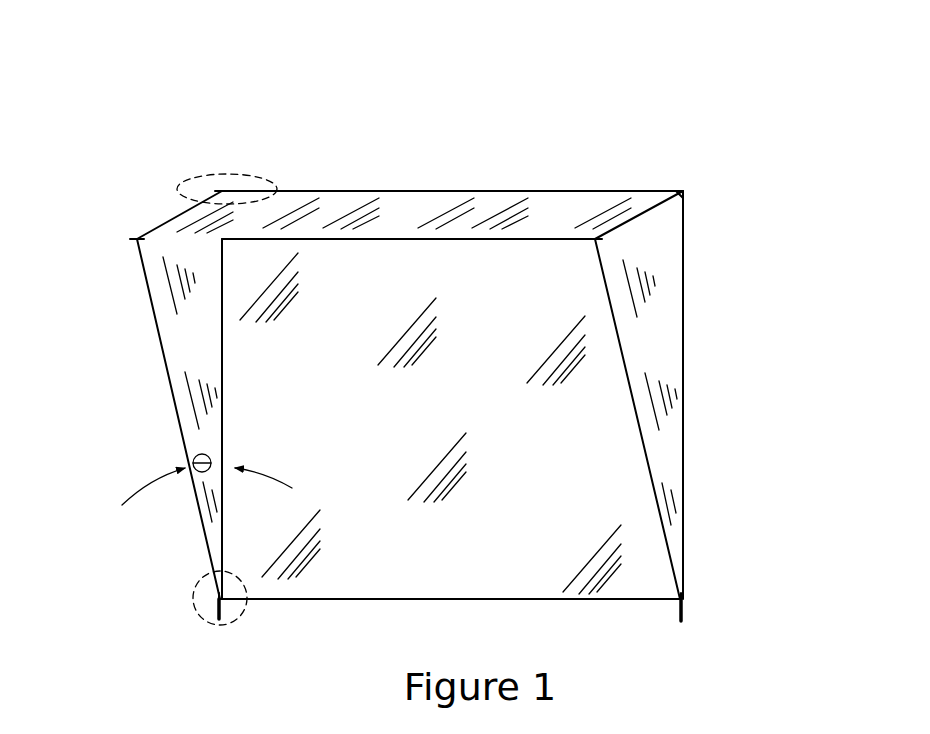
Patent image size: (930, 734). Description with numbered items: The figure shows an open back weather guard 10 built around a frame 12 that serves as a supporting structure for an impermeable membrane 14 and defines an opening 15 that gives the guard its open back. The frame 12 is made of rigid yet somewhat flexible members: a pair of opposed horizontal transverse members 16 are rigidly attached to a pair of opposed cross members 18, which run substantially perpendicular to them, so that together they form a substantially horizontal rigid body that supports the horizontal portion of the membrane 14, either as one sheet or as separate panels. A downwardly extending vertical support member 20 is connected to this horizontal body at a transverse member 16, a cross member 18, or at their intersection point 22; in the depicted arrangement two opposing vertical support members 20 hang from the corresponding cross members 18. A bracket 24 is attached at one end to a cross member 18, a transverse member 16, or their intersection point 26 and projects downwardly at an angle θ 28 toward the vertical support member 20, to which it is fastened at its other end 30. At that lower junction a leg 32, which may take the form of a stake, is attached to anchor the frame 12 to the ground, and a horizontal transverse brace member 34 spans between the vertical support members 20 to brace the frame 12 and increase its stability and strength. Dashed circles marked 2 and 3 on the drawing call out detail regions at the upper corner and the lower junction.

The open back weather guard 10 is at (630, 63).
The frame 12 is at (683, 246).
The impermeable membrane 14 is at (537, 195).
The opening 15 is at (524, 466).
The horizontal transverse members 16 is at (407, 239).
The cross members 18 is at (177, 213).
The vertical support member 20 is at (222, 367).
The intersection point 22 is at (220, 190).
The bracket 24 is at (170, 385).
The intersection point 26 is at (136, 239).
The angle θ 28 is at (273, 474).
The other end 30 is at (217, 614).
The leg 32 is at (222, 607).
The horizontal transverse brace member 34 is at (428, 598).
The detail circle 2 is at (193, 590).
The detail section 3 is at (265, 178).